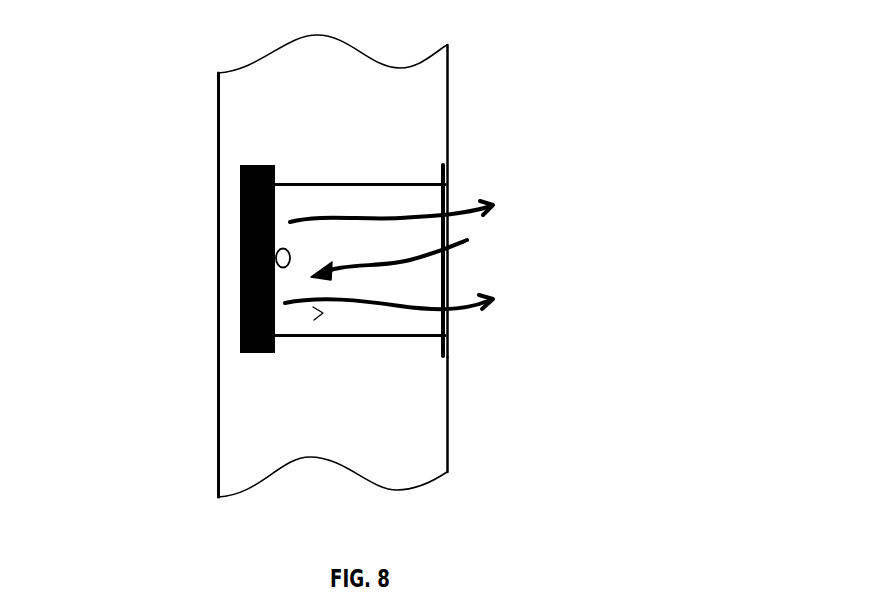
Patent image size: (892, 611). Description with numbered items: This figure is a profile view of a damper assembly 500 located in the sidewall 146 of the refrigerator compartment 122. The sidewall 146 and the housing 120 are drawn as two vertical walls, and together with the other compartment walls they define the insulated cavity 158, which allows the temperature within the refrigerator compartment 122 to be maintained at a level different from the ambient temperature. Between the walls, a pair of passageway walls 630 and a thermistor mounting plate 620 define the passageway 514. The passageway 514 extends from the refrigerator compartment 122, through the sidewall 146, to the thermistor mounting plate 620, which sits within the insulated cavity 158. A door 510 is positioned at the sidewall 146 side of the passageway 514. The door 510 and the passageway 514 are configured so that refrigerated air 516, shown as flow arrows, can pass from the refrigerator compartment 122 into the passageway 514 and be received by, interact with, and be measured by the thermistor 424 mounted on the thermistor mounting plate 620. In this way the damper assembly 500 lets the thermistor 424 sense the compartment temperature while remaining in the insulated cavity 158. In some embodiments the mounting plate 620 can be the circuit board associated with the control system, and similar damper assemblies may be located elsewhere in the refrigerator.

The damper assembly 500 is at (683, 168).
The housing 120 is at (217, 95).
The sidewall 146 is at (449, 80).
The refrigerator compartment 122 is at (507, 378).
The insulated cavity 158 is at (368, 443).
The door 510 is at (450, 196).
The passageway walls 630 is at (328, 184).
The thermistor mounting plate 620 is at (240, 174).
The thermistor 424 is at (276, 262).
The passageway 514 is at (318, 314).
The refrigerated air 516 is at (480, 240).